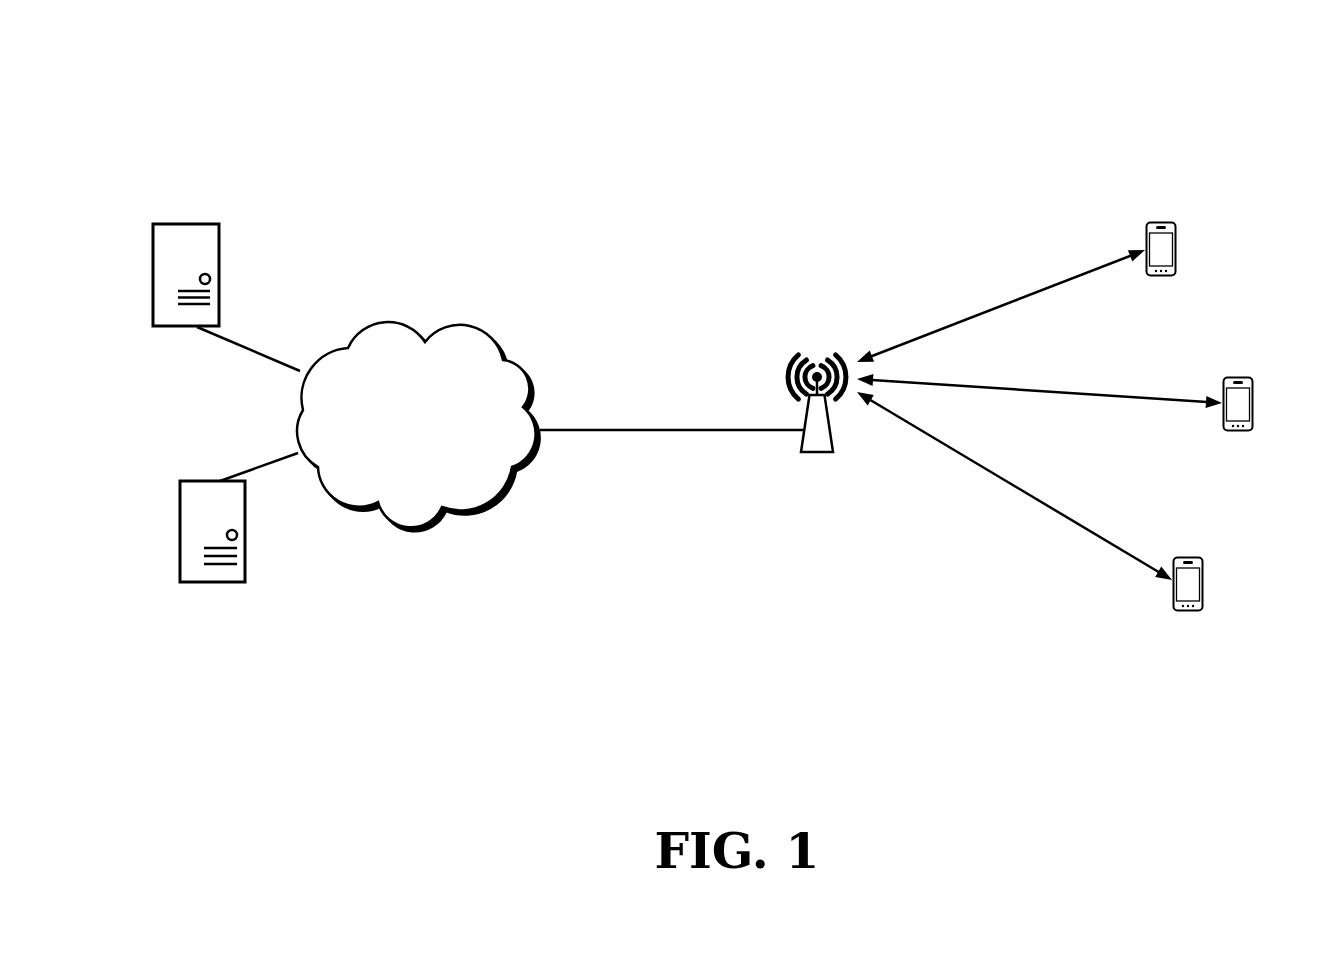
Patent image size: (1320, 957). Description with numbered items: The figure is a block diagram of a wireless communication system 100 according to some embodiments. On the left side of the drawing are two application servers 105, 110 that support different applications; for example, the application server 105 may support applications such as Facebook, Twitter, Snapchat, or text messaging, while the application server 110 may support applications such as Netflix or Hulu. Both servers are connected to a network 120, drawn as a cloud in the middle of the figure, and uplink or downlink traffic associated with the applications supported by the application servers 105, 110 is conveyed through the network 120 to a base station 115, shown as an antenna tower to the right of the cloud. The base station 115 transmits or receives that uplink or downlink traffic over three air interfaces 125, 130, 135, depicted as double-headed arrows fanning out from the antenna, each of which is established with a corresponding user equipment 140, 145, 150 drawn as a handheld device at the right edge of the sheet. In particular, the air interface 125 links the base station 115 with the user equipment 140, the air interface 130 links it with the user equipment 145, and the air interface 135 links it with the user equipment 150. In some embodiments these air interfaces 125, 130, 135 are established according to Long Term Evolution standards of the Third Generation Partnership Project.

The wireless communication system 100 is at (1228, 100).
The application server 105 is at (152, 280).
The application server 110 is at (180, 532).
The base station 115 is at (815, 455).
The network 120 is at (400, 446).
The air interface 125 is at (1026, 293).
The air interface 130 is at (1072, 394).
The air interface 135 is at (1046, 506).
The user equipment 140 is at (1160, 280).
The user equipment 145 is at (1240, 435).
The user equipment 150 is at (1186, 613).